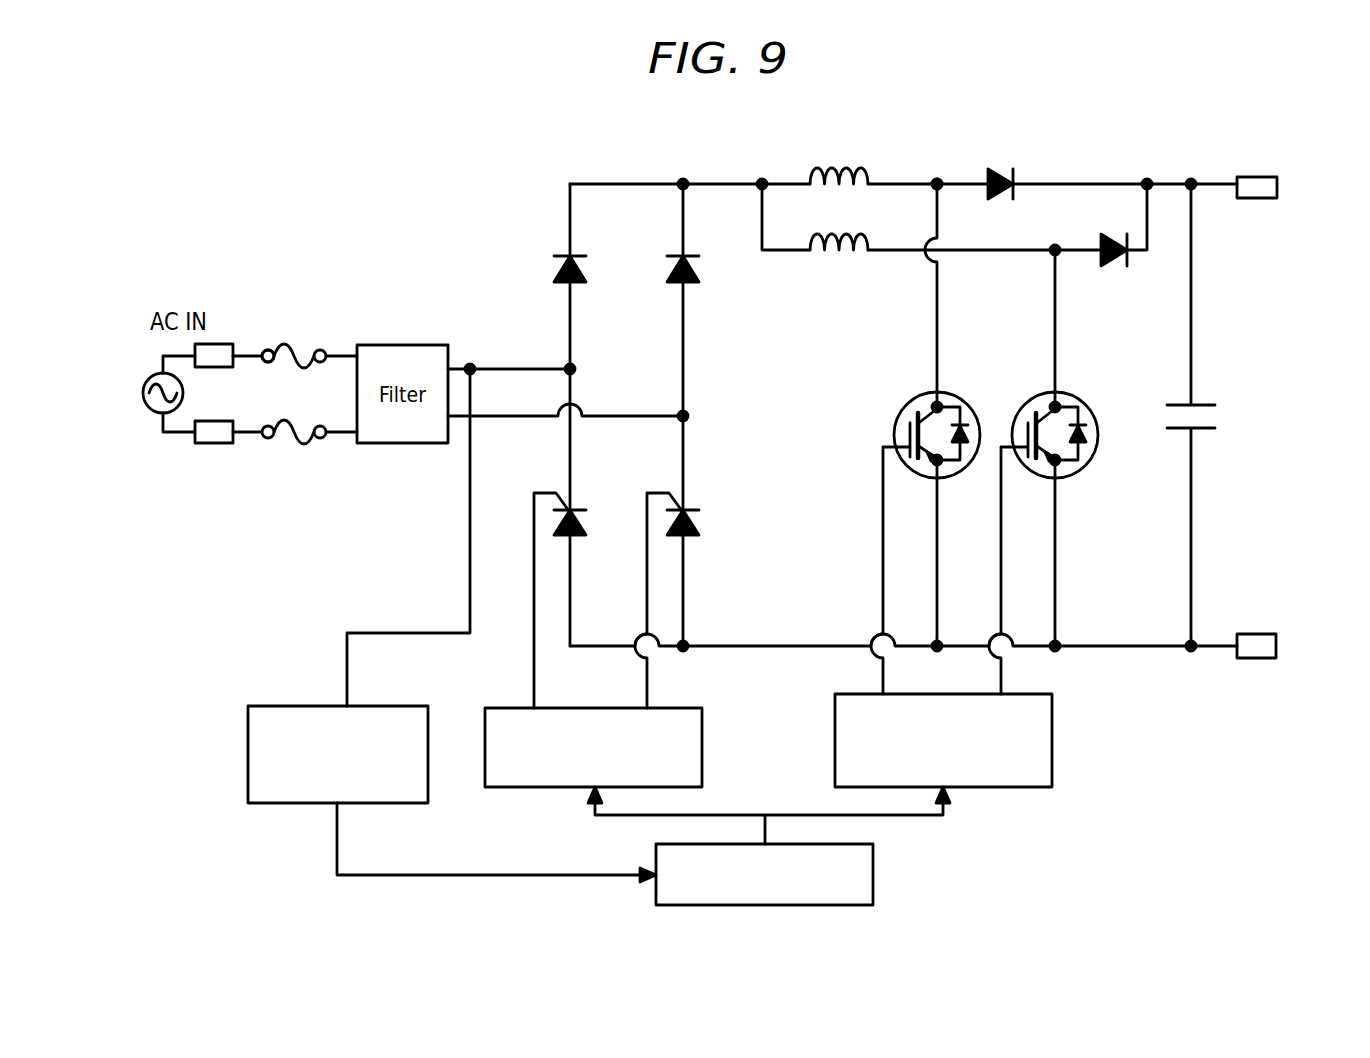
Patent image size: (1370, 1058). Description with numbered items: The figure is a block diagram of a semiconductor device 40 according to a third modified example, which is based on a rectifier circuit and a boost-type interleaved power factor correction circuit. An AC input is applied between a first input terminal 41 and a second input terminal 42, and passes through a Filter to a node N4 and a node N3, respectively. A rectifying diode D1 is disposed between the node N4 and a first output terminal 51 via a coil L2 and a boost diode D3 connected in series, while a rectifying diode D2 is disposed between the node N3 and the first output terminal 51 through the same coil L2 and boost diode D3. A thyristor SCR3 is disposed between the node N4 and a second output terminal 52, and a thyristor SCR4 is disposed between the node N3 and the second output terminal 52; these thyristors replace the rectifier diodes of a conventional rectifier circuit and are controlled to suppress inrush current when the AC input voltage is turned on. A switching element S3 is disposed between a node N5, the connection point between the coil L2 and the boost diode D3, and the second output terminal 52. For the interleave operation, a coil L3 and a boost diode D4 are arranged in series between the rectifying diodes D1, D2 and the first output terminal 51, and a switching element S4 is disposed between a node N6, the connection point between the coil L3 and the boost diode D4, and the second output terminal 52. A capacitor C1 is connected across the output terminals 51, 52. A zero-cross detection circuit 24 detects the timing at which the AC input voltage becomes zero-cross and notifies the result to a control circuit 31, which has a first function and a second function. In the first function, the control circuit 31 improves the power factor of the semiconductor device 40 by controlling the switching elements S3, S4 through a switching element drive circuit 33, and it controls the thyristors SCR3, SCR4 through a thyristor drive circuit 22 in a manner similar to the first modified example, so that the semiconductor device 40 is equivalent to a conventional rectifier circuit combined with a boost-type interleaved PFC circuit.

The semiconductor device 40 is at (474, 216).
The first input terminal 41 is at (223, 343).
The second input terminal 42 is at (218, 445).
The zero-cross detection circuit 24 is at (375, 703).
The thyristor drive circuit 22 is at (703, 740).
The switching element drive circuit 33 is at (1053, 735).
The control circuit 31 is at (874, 878).
The first output terminal 51 is at (1258, 200).
The second output terminal 52 is at (1258, 660).
The rectifying diode D1 is at (575, 282).
The rectifying diode D2 is at (690, 282).
The boost diode D3 is at (992, 170).
The boost diode D4 is at (1105, 270).
The coil L2 is at (855, 157).
The coil L3 is at (835, 257).
The node N3 is at (690, 410).
The node N4 is at (574, 364).
The node N5 is at (938, 176).
The node N6 is at (1057, 240).
The switching element S3 is at (950, 393).
The switching element S4 is at (1068, 393).
The thyristor SCR3 is at (578, 535).
The thyristor SCR4 is at (690, 535).
The capacitor C1 is at (1209, 415).